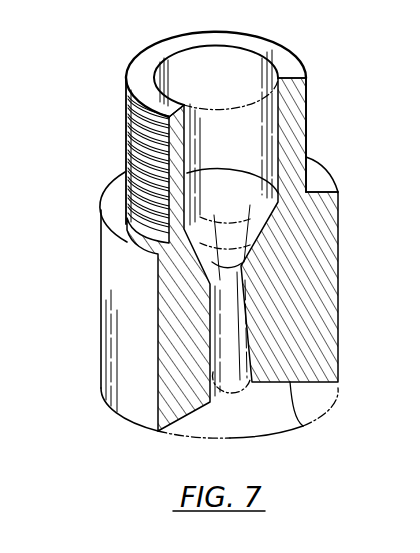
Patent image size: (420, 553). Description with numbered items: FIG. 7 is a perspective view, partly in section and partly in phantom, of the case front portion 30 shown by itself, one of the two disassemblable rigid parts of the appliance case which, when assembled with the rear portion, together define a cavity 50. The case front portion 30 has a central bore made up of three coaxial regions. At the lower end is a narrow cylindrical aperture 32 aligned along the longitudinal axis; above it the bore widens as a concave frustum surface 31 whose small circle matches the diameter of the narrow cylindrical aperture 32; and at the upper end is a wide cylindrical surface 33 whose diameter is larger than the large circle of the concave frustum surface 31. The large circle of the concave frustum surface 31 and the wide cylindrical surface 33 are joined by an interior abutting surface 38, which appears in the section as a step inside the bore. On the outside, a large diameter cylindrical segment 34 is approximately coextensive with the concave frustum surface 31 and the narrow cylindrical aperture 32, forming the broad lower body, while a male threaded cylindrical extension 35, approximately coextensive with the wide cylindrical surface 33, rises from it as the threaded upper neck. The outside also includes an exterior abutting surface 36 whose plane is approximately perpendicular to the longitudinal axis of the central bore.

The case front portion 30 is at (106, 449).
The concave frustum surface 31 is at (250, 268).
The narrow cylindrical aperture 32 is at (233, 346).
The wide cylindrical surface 33 is at (243, 135).
The large diameter cylindrical segment 34 is at (122, 268).
The male threaded cylindrical extension 35 is at (127, 125).
The exterior abutting surface 36 is at (304, 428).
The interior abutting surface 38 is at (252, 172).
The cavity 50 is at (205, 66).